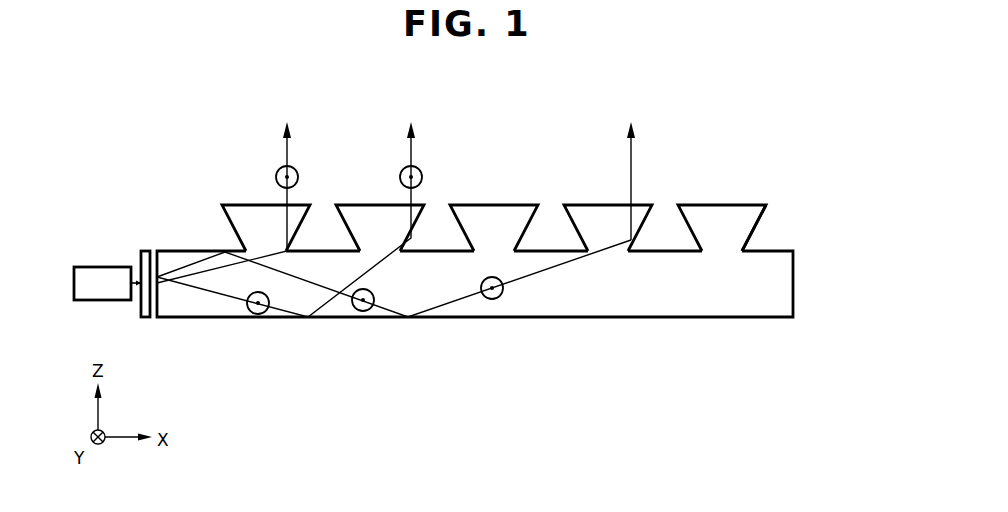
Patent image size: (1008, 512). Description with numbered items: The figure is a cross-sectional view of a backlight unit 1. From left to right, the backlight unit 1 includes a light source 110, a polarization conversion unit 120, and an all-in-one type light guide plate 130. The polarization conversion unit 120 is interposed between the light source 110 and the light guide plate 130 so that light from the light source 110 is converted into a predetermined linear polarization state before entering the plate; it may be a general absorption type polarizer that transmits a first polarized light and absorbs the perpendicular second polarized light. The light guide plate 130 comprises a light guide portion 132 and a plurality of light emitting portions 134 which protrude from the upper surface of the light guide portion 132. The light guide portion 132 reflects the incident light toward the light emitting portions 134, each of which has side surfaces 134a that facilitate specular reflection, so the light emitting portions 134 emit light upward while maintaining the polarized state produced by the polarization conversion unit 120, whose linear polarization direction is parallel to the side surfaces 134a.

The backlight unit 1 is at (794, 156).
The light source 110 is at (89, 270).
The polarization conversion unit 120 is at (145, 250).
The light guide plate 130 is at (860, 212).
The light guide portion 132 is at (785, 281).
The light emitting portions 134 is at (752, 216).
The side surfaces 134a is at (748, 240).